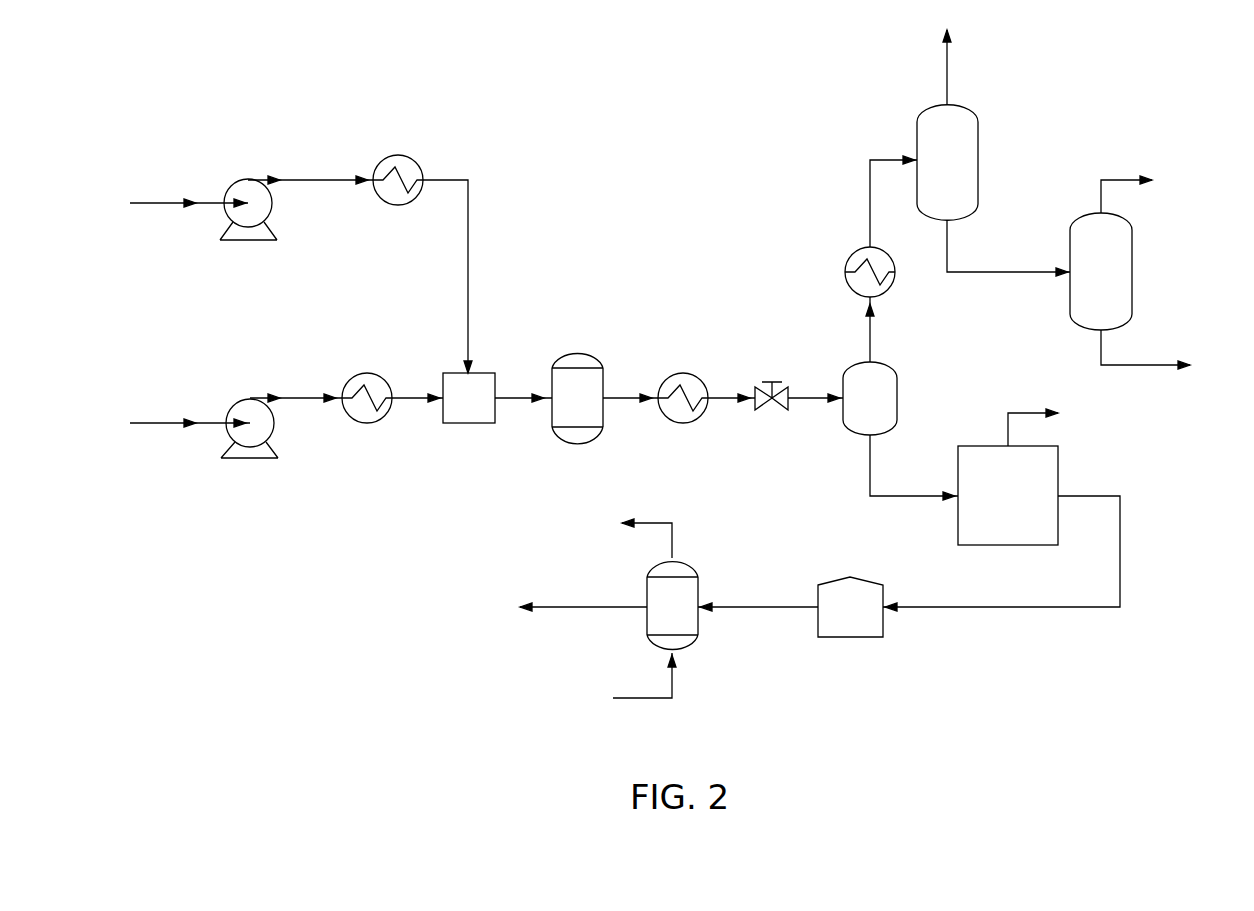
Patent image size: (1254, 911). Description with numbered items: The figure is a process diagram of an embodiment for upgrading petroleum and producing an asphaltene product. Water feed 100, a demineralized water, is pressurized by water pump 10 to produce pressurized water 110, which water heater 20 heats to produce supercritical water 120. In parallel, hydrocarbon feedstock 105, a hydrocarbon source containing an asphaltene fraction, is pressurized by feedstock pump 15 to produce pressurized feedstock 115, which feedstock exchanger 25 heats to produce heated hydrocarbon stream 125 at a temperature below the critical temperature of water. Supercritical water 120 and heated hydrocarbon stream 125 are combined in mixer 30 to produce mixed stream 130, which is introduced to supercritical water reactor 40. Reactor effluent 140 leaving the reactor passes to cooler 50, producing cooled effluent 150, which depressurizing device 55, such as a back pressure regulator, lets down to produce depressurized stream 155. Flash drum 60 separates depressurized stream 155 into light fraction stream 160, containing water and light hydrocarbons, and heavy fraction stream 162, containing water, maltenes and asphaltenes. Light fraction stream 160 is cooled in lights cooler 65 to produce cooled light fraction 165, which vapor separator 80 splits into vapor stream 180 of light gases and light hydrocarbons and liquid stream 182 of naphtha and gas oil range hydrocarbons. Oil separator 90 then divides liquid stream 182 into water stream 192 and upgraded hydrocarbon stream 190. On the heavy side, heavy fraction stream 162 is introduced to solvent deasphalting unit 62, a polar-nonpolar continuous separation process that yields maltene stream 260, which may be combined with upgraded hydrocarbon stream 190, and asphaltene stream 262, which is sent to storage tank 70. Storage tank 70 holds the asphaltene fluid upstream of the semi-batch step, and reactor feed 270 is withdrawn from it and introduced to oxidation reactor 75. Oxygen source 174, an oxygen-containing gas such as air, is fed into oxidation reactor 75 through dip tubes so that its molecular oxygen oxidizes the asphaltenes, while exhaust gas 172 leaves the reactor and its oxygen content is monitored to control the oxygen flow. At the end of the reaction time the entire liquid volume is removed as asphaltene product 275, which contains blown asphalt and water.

The water pump 10 is at (247, 242).
The feedstock pump 15 is at (250, 460).
The water heater 20 is at (402, 207).
The feedstock exchanger 25 is at (367, 425).
The mixer 30 is at (456, 410).
The supercritical water reactor 40 is at (564, 410).
The cooler 50 is at (683, 422).
The depressurizing device 55 is at (777, 408).
The flash drum 60 is at (857, 410).
The solvent deasphalting unit 62 is at (995, 508).
The lights cooler 65 is at (847, 260).
The storage tank 70 is at (837, 618).
The oxidation reactor 75 is at (659, 618).
The vapor separator 80 is at (934, 175).
The oil separator 90 is at (1088, 284).
The water feed 100 is at (162, 203).
The hydrocarbon feedstock 105 is at (162, 423).
The pressurized water 110 is at (322, 177).
The pressurized feedstock 115 is at (303, 395).
The supercritical water 120 is at (468, 180).
The heated hydrocarbon stream 125 is at (408, 397).
The mixed stream 130 is at (507, 398).
The reactor effluent 140 is at (613, 398).
The cooled effluent 150 is at (728, 398).
The depressurized stream 155 is at (810, 398).
The light fraction stream 160 is at (872, 337).
The heavy fraction stream 162 is at (878, 496).
The cooled light fraction 165 is at (868, 187).
The exhaust gas 172 is at (655, 523).
The oxygen source 174 is at (652, 698).
The vapor stream 180 is at (945, 75).
The liquid stream 182 is at (1018, 272).
The upgraded hydrocarbon stream 190 is at (1112, 180).
The water stream 192 is at (1145, 365).
The maltene stream 260 is at (1022, 413).
The asphaltene stream 262 is at (1028, 607).
The reactor feed 270 is at (793, 607).
The asphaltene product 275 is at (578, 607).